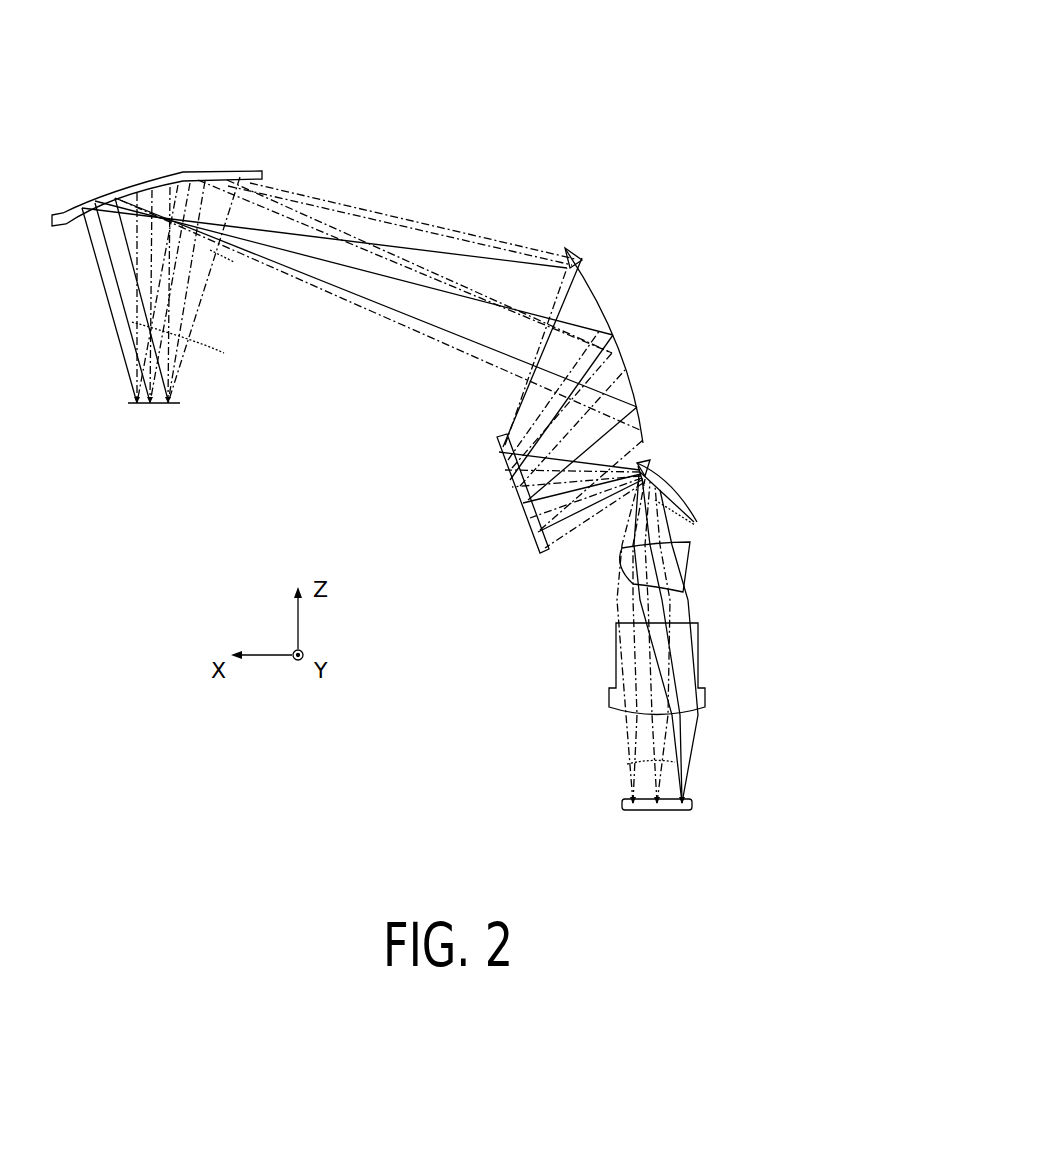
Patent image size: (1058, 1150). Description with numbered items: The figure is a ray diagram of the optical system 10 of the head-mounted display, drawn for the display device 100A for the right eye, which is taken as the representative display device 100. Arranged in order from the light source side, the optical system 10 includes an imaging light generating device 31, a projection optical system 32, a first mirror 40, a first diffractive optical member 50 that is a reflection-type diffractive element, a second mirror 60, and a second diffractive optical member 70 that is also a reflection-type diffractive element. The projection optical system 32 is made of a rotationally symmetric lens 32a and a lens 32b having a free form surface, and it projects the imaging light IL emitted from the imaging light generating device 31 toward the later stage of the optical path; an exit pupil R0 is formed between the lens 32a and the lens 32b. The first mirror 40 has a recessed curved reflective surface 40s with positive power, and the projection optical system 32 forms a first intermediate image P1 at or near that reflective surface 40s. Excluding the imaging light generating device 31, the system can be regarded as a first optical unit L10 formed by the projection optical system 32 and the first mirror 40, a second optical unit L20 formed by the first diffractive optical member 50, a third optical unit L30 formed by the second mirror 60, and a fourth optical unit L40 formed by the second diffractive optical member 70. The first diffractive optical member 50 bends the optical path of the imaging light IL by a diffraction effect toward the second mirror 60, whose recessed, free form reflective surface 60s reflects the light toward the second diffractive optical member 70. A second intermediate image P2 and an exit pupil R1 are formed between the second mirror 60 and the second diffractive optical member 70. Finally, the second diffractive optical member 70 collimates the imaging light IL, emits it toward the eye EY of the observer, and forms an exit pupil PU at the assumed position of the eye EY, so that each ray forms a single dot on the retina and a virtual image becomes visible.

The display device 100 is at (623, 82).
The display device for the right eye 100A is at (448, 440).
The optical system 10 is at (637, 167).
The second diffractive optical member 70 is at (192, 176).
The fourth optical unit L40 is at (136, 155).
The second intermediate image P2 is at (228, 264).
The imaging light IL is at (190, 332).
The exit pupil PU is at (181, 403).
The eye EY is at (154, 400).
The second mirror 60 is at (592, 291).
The reflective surface 60s is at (585, 300).
The third optical unit L30 is at (690, 315).
The exit pupil R1 is at (495, 385).
The first diffractive optical member 50 is at (536, 540).
The second optical unit L20 is at (465, 528).
The first mirror 40 is at (645, 480).
The reflective surface 40s is at (640, 510).
The first optical unit L10 is at (762, 465).
The exit pupil R0 is at (611, 608).
The first intermediate image P1 is at (701, 530).
The projection optical system 32 is at (795, 553).
The lens having a free form surface 32b is at (690, 556).
The rotationally symmetric lens 32a is at (698, 656).
The imaging light generating device 31 is at (660, 812).